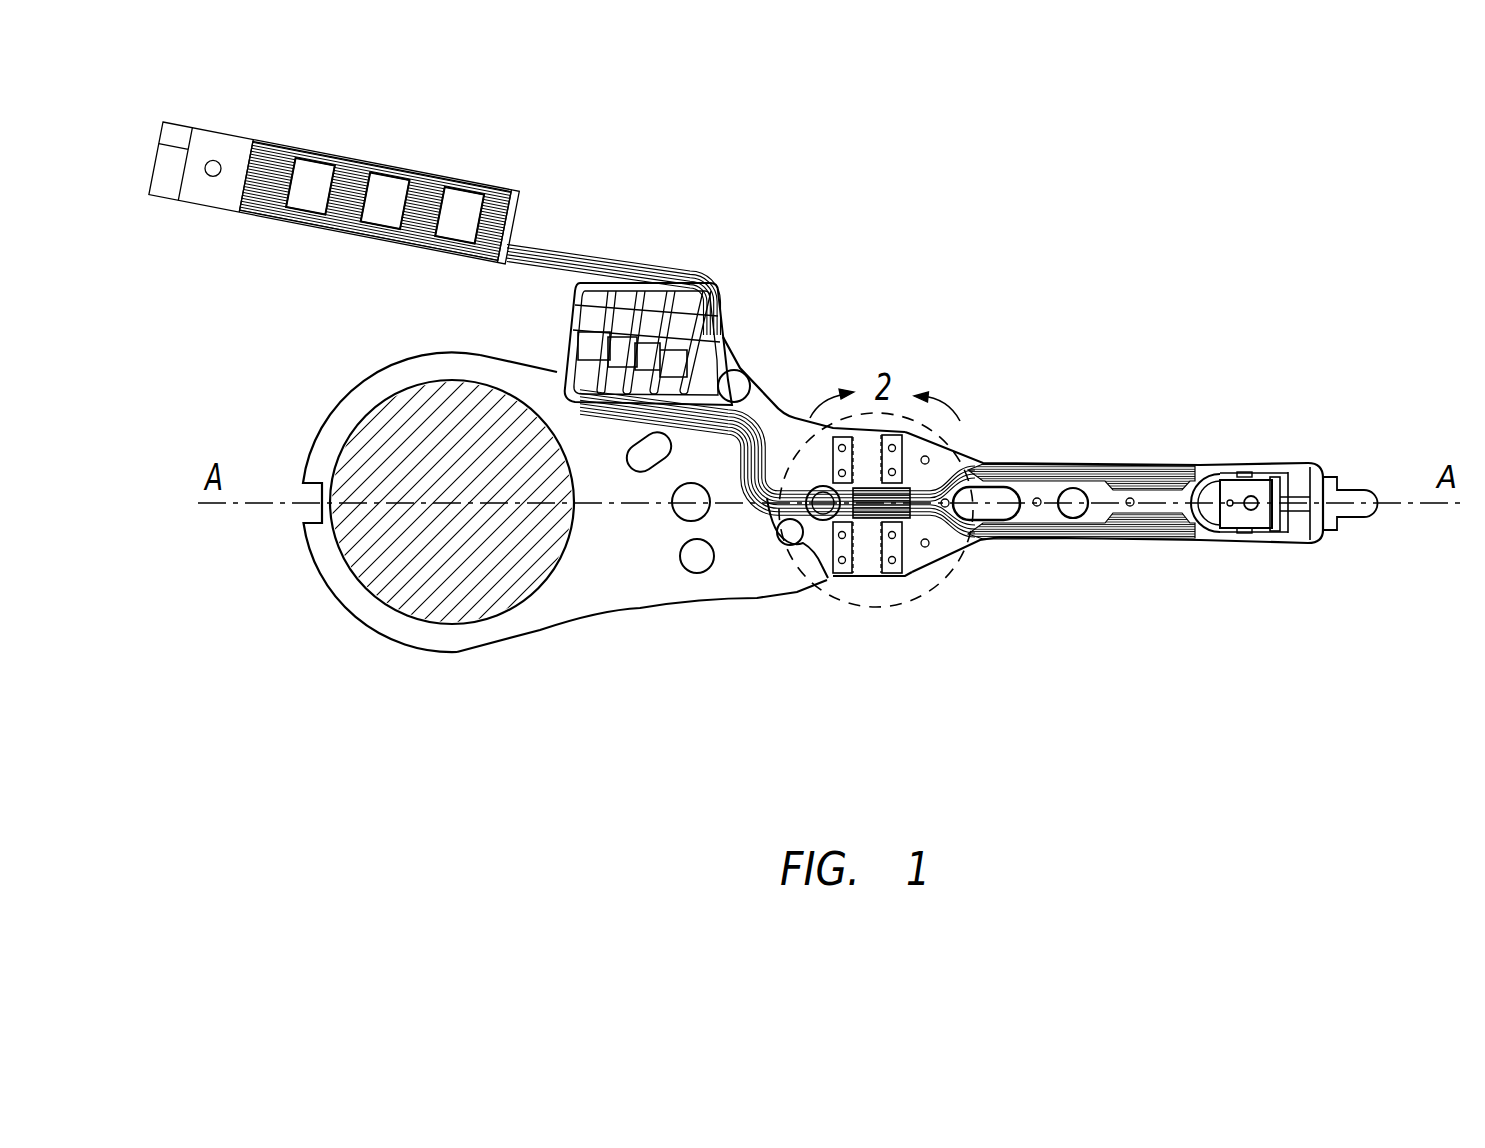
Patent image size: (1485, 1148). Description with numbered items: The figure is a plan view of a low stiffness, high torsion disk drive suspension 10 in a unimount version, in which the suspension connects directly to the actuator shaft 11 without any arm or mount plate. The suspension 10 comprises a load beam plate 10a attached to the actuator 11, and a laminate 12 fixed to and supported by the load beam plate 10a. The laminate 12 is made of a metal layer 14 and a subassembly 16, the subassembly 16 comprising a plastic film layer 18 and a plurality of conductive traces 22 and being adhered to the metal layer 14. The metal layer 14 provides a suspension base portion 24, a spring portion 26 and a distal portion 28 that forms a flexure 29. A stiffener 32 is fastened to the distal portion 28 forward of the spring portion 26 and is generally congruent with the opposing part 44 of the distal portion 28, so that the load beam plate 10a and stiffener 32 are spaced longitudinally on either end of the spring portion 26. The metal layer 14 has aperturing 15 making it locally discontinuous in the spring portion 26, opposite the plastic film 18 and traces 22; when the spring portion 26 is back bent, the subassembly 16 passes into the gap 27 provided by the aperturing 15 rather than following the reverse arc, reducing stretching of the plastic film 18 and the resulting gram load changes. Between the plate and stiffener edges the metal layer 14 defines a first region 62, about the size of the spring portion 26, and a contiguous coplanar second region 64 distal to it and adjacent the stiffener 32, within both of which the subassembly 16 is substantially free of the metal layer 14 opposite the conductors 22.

The disk drive suspension 10 is at (140, 320).
The load beam plate 10a is at (670, 582).
The actuator shaft 11 is at (510, 585).
The laminate 12 is at (1005, 545).
The metal layer 14 is at (942, 447).
The aperturing 15 is at (878, 435).
The subassembly 16 is at (745, 500).
The plastic film layer 18 is at (1020, 450).
The conductive traces 22 is at (1060, 530).
The suspension base portion 24 is at (779, 413).
The spring portion 26 is at (868, 435).
The gap 27 is at (873, 567).
The distal portion 28 is at (1107, 470).
The flexure 29 is at (1270, 475).
The stiffener 32 is at (1157, 540).
The opposing part of the distal portion 44 is at (1095, 542).
The first region 62 is at (877, 577).
The second region 64 is at (893, 545).